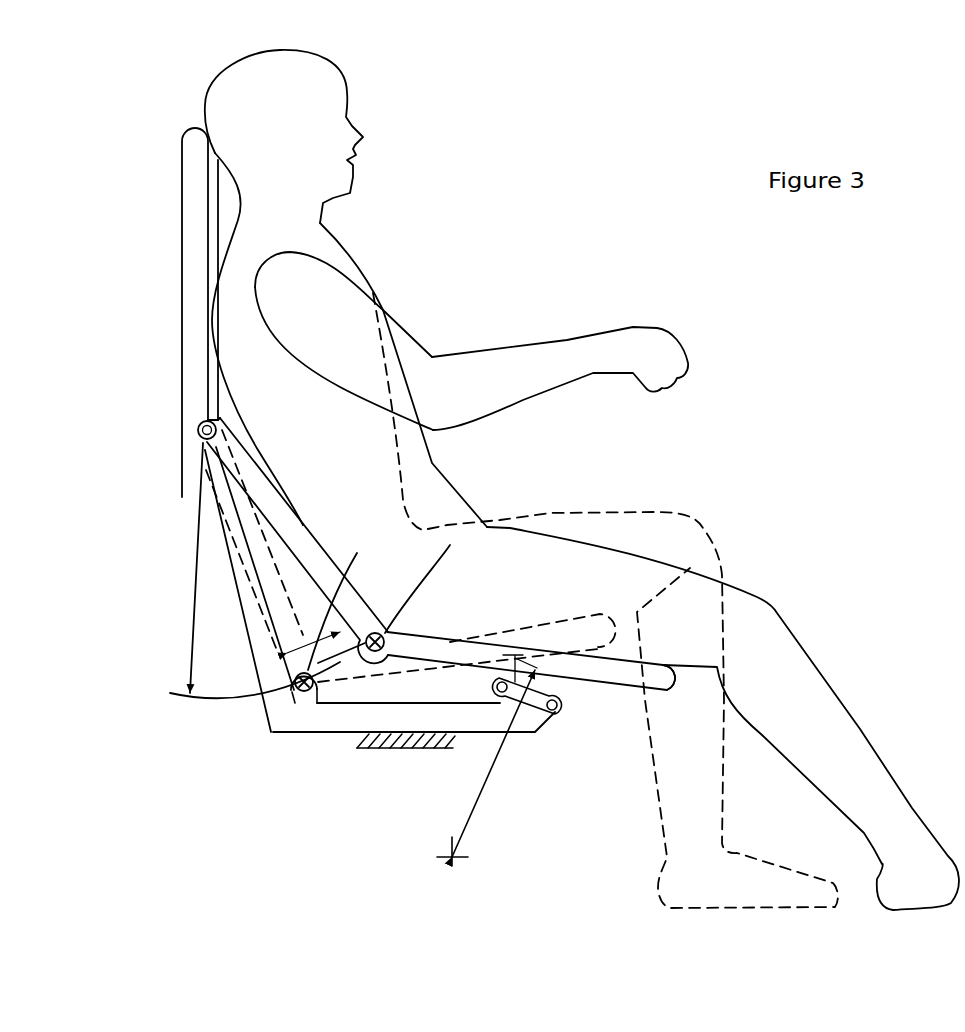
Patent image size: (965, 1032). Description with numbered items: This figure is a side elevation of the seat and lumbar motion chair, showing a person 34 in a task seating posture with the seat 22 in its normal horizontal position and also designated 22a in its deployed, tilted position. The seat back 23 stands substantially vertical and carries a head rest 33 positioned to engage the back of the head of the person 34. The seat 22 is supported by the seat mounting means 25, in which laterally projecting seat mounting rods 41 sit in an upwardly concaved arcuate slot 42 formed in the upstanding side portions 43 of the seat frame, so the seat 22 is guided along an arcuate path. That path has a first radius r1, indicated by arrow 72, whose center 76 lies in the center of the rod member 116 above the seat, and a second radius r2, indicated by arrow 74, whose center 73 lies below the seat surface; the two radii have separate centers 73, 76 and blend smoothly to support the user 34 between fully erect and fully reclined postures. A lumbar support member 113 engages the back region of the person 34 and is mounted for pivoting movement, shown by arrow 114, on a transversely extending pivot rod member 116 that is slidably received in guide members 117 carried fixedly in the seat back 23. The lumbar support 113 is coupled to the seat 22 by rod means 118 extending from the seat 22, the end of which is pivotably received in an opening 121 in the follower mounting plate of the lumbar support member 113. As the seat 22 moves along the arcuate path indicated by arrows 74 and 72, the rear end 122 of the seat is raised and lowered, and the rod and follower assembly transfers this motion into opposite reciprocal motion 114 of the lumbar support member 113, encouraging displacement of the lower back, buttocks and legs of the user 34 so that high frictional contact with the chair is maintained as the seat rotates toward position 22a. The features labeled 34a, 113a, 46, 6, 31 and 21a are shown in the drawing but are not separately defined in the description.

The head rest 33 is at (190, 153).
The person 34 is at (335, 260).
The seat occupant in alternative (raised) position 34a is at (407, 523).
The seat back 23 is at (190, 408).
The guide members 117 is at (196, 430).
The center 76 is at (205, 417).
The lumbar support member 113 is at (257, 542).
The upper edge of strut 113 113a is at (277, 500).
The pivot rod member 116 is at (199, 441).
The support link 46 is at (203, 447).
The arrow 72 is at (190, 628).
The first radius r1 is at (254, 680).
The arrow 114 is at (345, 602).
The rear end of the seat 122 is at (387, 630).
The seat 22 is at (578, 628).
The seat in deployed position 22a is at (613, 677).
The direction arrow 6 is at (577, 684).
The arrow 74 is at (483, 787).
The second radius r2 is at (532, 669).
The center 73 is at (458, 852).
The seat mounting rods 41 is at (555, 707).
The arcuate slot 42 is at (280, 733).
The upstanding side portions 43 is at (272, 705).
The mounting means 25 is at (250, 722).
The opening 121 is at (307, 691).
The rod means 118 is at (299, 692).
The floor mounting 31 is at (397, 750).
The vehicle floor 21a is at (379, 837).